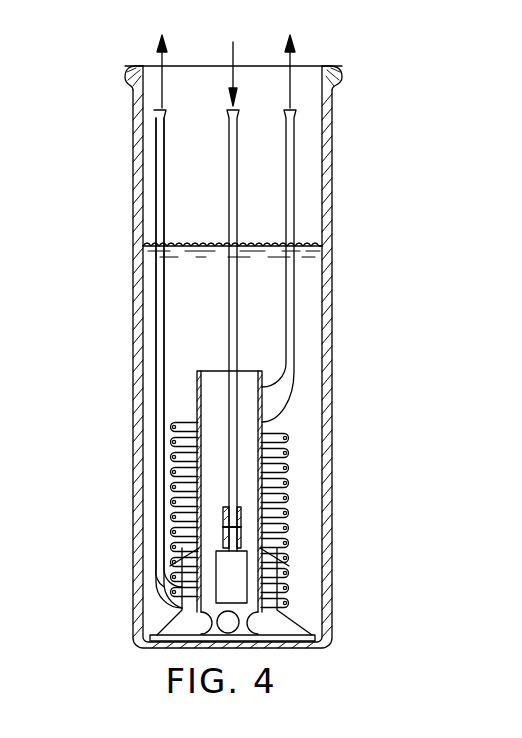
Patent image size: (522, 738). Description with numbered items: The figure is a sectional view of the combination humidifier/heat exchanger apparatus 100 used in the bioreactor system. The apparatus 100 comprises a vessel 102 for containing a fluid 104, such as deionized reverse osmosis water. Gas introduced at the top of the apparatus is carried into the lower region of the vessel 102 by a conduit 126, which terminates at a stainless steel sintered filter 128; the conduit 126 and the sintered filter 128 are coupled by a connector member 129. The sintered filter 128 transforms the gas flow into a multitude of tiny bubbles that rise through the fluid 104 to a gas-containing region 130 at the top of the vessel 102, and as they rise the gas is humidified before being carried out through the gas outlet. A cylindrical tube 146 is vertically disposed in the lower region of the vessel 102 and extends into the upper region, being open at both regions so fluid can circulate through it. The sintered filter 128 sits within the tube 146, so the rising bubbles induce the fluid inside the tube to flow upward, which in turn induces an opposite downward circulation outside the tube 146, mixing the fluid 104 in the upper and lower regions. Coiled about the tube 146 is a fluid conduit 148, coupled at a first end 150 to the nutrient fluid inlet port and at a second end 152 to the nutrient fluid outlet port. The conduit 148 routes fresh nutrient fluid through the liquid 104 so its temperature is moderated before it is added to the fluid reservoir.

The humidifier/heat exchanger apparatus 100 is at (112, 100).
The vessel 102 is at (342, 75).
The fluid 104 is at (270, 312).
The conduit 126 is at (229, 158).
The stainless steel sintered filter 128 is at (244, 578).
The connector member 129 is at (250, 523).
The gas-containing region 130 is at (178, 215).
The cylindrical tube 146 is at (262, 380).
The fluid conduit 148 is at (293, 432).
The first end 150 is at (295, 146).
The second end 152 is at (158, 158).